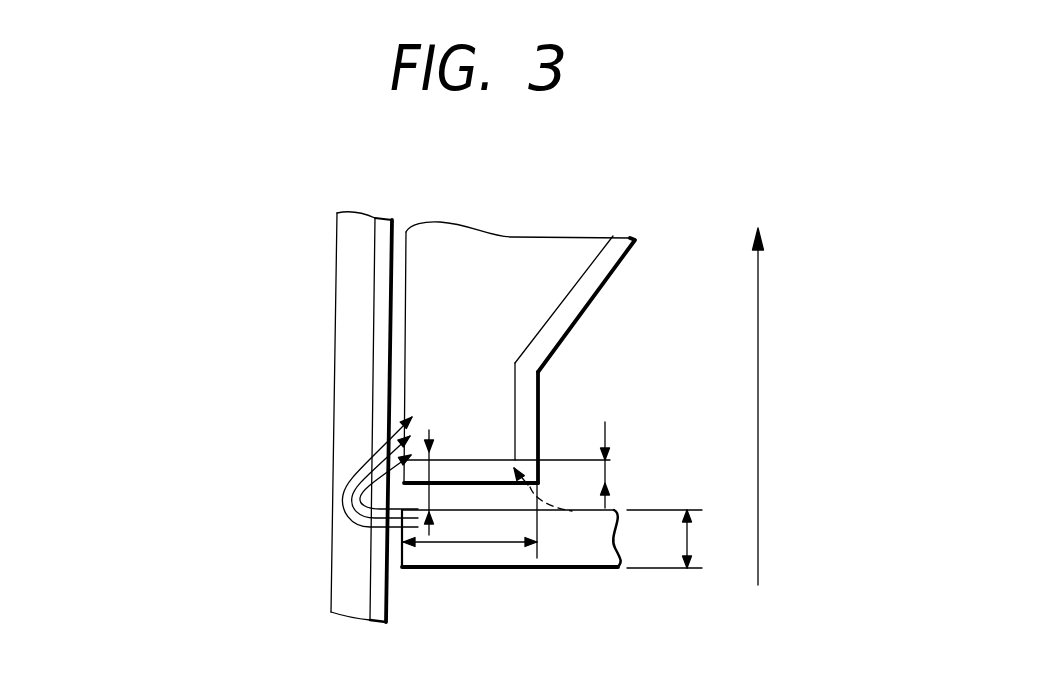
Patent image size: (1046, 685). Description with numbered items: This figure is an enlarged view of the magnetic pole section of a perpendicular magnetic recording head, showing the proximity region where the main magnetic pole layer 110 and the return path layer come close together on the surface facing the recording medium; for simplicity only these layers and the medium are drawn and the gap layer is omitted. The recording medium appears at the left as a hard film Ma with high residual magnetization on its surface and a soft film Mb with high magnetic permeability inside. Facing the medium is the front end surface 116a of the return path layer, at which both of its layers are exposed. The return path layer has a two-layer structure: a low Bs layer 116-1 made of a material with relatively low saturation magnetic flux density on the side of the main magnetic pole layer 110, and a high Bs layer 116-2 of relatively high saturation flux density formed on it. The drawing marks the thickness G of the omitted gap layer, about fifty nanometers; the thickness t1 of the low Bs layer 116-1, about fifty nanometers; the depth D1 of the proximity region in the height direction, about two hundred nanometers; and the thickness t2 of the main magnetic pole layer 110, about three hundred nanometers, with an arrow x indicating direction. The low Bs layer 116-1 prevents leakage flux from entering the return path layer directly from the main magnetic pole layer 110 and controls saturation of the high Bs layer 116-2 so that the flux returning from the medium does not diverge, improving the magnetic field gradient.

The soft film Mb is at (348, 238).
The hard film Ma is at (383, 230).
The front end surface of the return path layer 116a is at (406, 250).
The high Bs layer 116-2 is at (574, 243).
The low Bs layer 116-1 is at (582, 290).
The main magnetic pole layer 110 is at (562, 553).
The thickness of the gap layer G is at (430, 491).
The depth of the proximity region D1 is at (470, 528).
The thickness of the low Bs layer t1 is at (622, 465).
The thickness of the main magnetic pole layer t2 is at (671, 539).
The x direction x is at (758, 392).